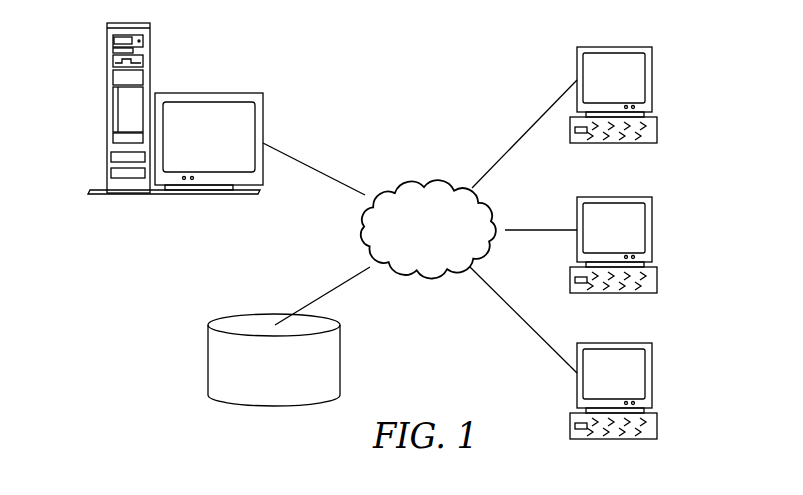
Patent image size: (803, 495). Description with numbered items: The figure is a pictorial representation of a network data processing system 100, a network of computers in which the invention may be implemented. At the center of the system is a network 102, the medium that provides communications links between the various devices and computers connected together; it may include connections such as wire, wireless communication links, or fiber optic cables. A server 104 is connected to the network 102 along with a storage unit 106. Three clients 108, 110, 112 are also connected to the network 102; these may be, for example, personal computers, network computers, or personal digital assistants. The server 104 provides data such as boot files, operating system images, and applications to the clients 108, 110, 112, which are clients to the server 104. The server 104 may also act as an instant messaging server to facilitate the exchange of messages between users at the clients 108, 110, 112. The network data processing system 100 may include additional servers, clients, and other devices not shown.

The network data processing system 100 is at (480, 58).
The network 102 is at (397, 178).
The server 104 is at (107, 112).
The storage unit 106 is at (207, 358).
The client 108 is at (652, 80).
The client 110 is at (643, 258).
The client 112 is at (643, 404).